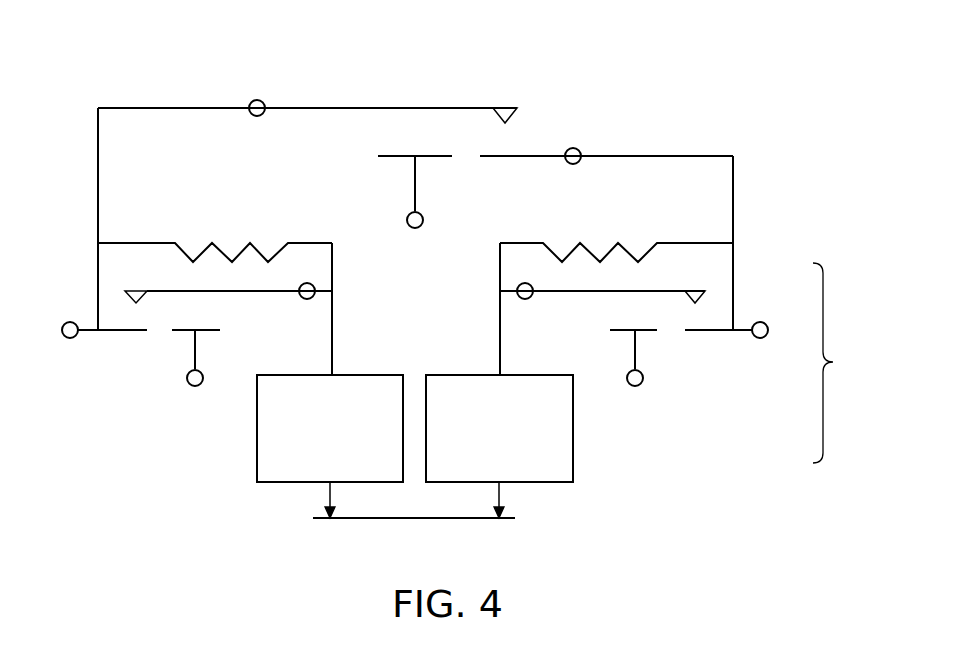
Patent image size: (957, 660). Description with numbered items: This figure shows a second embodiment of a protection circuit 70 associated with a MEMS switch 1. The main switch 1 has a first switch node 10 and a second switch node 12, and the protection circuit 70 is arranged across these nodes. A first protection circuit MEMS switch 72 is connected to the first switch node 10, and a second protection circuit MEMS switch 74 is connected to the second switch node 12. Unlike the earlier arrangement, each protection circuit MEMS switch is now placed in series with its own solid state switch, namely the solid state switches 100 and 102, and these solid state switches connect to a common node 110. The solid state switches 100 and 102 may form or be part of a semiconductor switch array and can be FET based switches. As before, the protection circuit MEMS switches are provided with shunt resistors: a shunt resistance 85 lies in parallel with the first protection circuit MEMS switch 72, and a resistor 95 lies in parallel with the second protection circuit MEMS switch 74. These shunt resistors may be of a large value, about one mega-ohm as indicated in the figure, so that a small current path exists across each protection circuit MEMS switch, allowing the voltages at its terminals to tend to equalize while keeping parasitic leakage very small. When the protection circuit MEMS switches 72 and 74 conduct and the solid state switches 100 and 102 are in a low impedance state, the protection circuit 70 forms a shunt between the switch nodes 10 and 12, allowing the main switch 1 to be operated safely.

The MEMS switch 1 is at (380, 69).
The first switch node 10 is at (64, 339).
The second switch node 12 is at (768, 327).
The protection circuit 70 is at (833, 362).
The first protection circuit MEMS switch 72 is at (253, 313).
The second protection circuit MEMS switch 74 is at (595, 315).
The shunt resistance 85 is at (257, 245).
The resistor 95 is at (620, 243).
The solid state switch 100 is at (256, 484).
The solid state switch 102 is at (574, 483).
The common node 110 is at (418, 520).